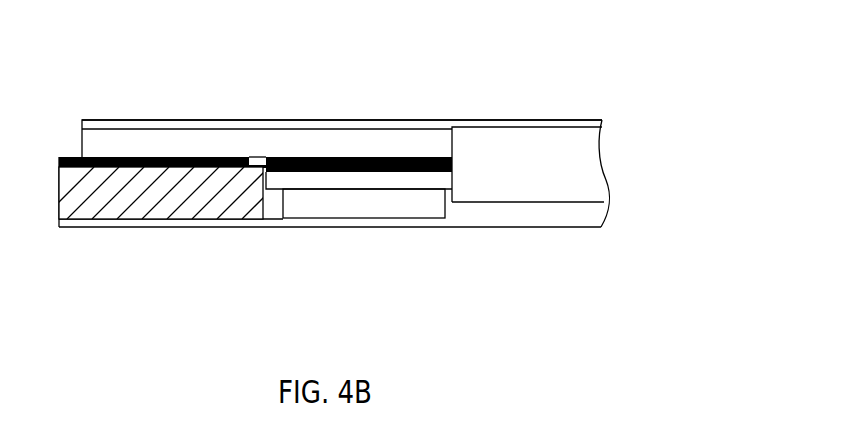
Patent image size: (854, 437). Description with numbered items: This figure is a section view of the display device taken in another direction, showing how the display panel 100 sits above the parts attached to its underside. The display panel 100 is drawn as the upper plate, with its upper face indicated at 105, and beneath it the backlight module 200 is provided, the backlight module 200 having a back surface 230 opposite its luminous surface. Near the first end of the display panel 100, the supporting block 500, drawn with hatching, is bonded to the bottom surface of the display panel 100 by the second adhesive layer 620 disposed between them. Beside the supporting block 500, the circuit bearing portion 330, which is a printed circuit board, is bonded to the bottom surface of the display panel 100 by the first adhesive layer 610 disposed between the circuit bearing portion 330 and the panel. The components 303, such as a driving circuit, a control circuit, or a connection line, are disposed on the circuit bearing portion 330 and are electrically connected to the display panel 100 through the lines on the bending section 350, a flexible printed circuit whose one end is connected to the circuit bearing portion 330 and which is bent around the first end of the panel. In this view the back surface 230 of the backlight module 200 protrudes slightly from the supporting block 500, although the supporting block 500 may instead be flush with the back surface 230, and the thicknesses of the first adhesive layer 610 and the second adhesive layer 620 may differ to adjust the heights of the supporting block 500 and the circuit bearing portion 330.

The display panel 100 is at (330, 105).
The top surface of cover plate 105 is at (175, 118).
The second adhesive layer 620 is at (207, 157).
The first adhesive layer 610 is at (383, 157).
The supporting block 500 is at (147, 205).
The back surface 230 is at (102, 228).
The backlight module 200 is at (567, 208).
The bending section 350 is at (508, 182).
The components 303 is at (328, 195).
The circuit bearing portion 330 is at (383, 178).